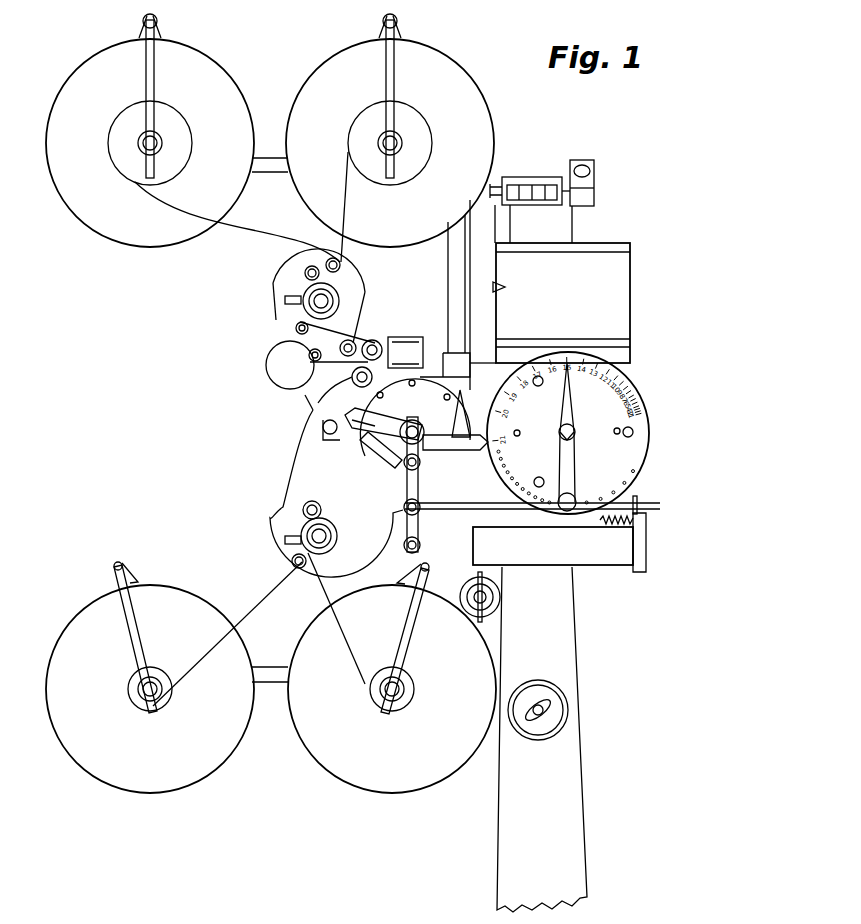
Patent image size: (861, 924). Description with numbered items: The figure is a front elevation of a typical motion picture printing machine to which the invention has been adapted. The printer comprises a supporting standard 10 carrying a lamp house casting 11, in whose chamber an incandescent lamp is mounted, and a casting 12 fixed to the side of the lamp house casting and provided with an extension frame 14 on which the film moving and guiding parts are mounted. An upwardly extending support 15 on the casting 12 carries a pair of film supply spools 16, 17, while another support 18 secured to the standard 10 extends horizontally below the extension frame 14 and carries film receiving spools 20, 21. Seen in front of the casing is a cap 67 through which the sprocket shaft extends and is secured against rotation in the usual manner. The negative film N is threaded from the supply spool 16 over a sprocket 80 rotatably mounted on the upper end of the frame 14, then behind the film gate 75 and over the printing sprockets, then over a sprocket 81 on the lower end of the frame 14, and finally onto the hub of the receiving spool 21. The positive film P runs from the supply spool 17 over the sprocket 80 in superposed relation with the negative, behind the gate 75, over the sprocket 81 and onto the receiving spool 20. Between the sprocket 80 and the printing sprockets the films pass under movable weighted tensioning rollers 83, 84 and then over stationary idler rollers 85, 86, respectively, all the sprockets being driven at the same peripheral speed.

The supporting standard 10 is at (558, 654).
The lamp house casting 11 is at (484, 367).
The casting 12 is at (434, 372).
The extension frame 14 is at (313, 475).
The upwardly extending support 15 is at (457, 274).
The film supply spool 16 is at (328, 76).
The film supply spool 17 is at (82, 87).
The support 18 is at (280, 673).
The film receiving spool 20 is at (108, 770).
The film receiving spool 21 is at (366, 778).
The cap 67 is at (424, 417).
The film gate 75 is at (317, 427).
The sprocket 80 is at (336, 297).
The sprocket 81 is at (333, 536).
The tensioning-roller 83 is at (267, 368).
The tensioning-roller 84 is at (349, 340).
The idler roller 85 is at (318, 403).
The idler roller 86 is at (375, 340).
The negative film N is at (340, 193).
The positive film P is at (167, 202).